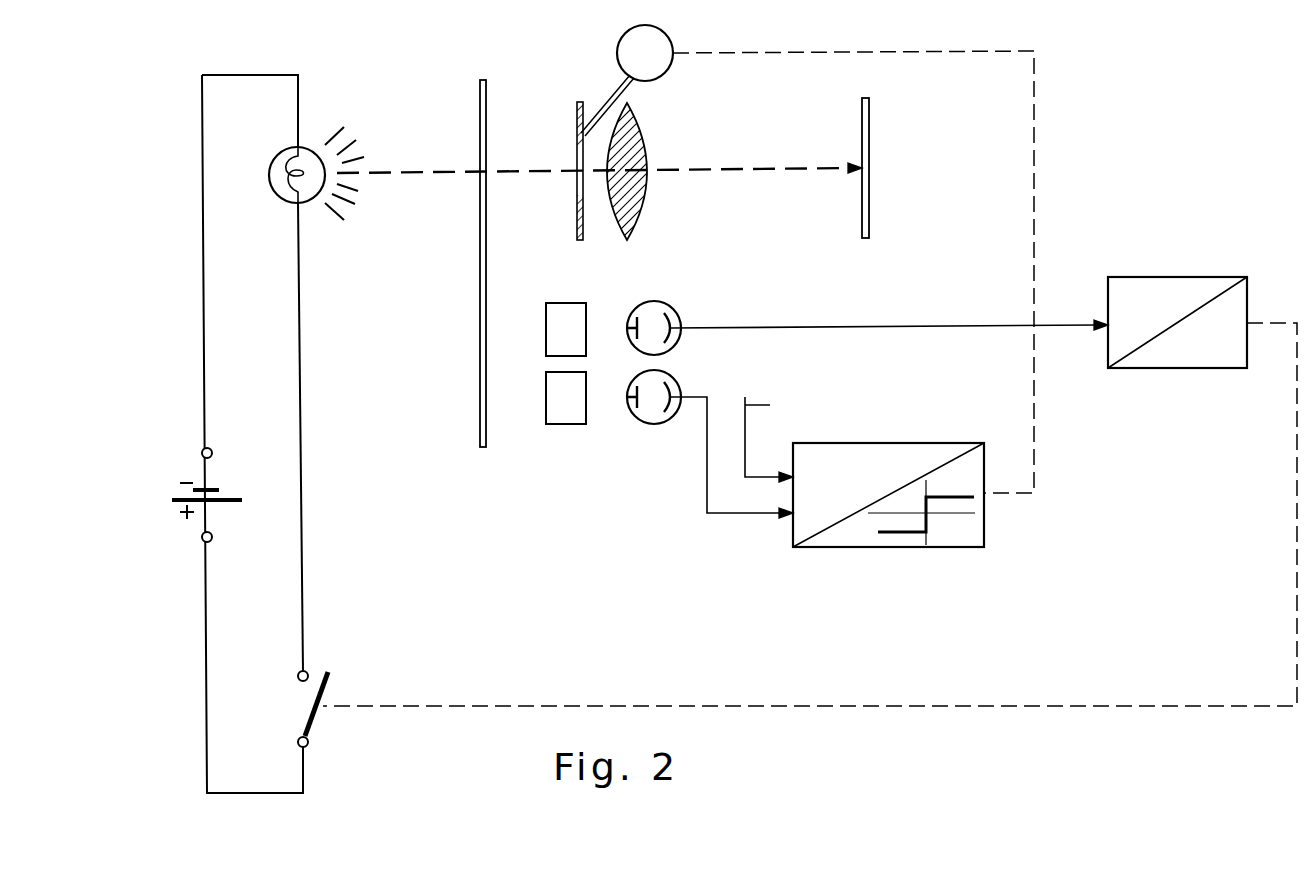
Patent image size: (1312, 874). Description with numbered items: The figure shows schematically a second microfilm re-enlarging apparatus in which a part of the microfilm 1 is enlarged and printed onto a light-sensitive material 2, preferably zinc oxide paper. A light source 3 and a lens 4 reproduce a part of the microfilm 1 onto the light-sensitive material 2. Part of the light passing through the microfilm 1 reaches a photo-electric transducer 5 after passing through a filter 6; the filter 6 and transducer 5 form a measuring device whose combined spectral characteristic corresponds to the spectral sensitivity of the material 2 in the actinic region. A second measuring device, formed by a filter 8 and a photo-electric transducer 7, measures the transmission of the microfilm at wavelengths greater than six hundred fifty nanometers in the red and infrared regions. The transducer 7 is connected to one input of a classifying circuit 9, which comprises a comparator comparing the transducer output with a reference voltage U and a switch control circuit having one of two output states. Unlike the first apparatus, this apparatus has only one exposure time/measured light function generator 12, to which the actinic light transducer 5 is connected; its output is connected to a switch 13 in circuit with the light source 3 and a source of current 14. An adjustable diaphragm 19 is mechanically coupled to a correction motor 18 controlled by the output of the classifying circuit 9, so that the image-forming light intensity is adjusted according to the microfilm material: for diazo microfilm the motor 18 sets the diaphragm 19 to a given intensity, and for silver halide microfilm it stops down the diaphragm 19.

The microfilm 1 is at (487, 100).
The light-sensitive material 2 is at (862, 108).
The light source 3 is at (280, 184).
The lens 4 is at (630, 140).
The photo-electric transducer 5 is at (655, 312).
The filter 6 is at (562, 312).
The photo-electric transducer 7 is at (653, 412).
The filter 8 is at (562, 412).
The classifying circuit 9 is at (928, 450).
The exposure time/measured light function generator 12 is at (1198, 286).
The switch 13 is at (308, 722).
The source of current 14 is at (216, 497).
The correction motor 18 is at (660, 62).
The adjustable diaphragm 19 is at (579, 110).